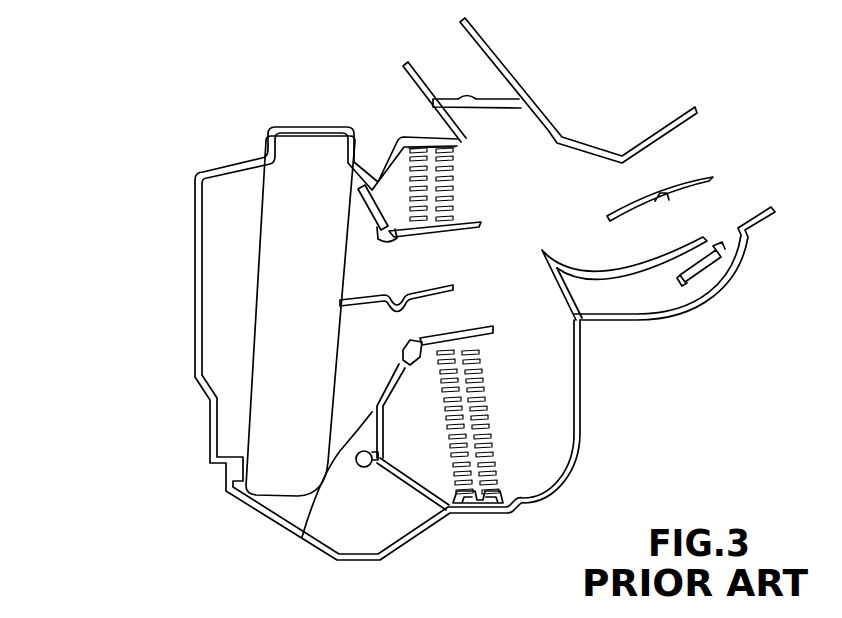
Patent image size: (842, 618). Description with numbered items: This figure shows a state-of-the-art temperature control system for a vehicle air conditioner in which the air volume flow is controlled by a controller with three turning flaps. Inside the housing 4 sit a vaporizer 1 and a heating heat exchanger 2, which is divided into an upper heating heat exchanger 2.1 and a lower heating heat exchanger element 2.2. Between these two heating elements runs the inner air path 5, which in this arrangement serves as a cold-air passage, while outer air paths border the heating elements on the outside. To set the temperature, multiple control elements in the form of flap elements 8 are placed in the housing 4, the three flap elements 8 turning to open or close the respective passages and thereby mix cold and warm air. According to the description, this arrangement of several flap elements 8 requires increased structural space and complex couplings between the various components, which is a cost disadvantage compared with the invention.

The vaporizer 1 is at (256, 430).
The heating heat exchanger 2 is at (474, 522).
The upper heating heat exchanger 2.1 is at (488, 163).
The lower heating heat exchanger element 2.2 is at (510, 414).
The housing 4 is at (143, 208).
The inner air path 5 is at (508, 264).
The flap elements 8 is at (352, 197).